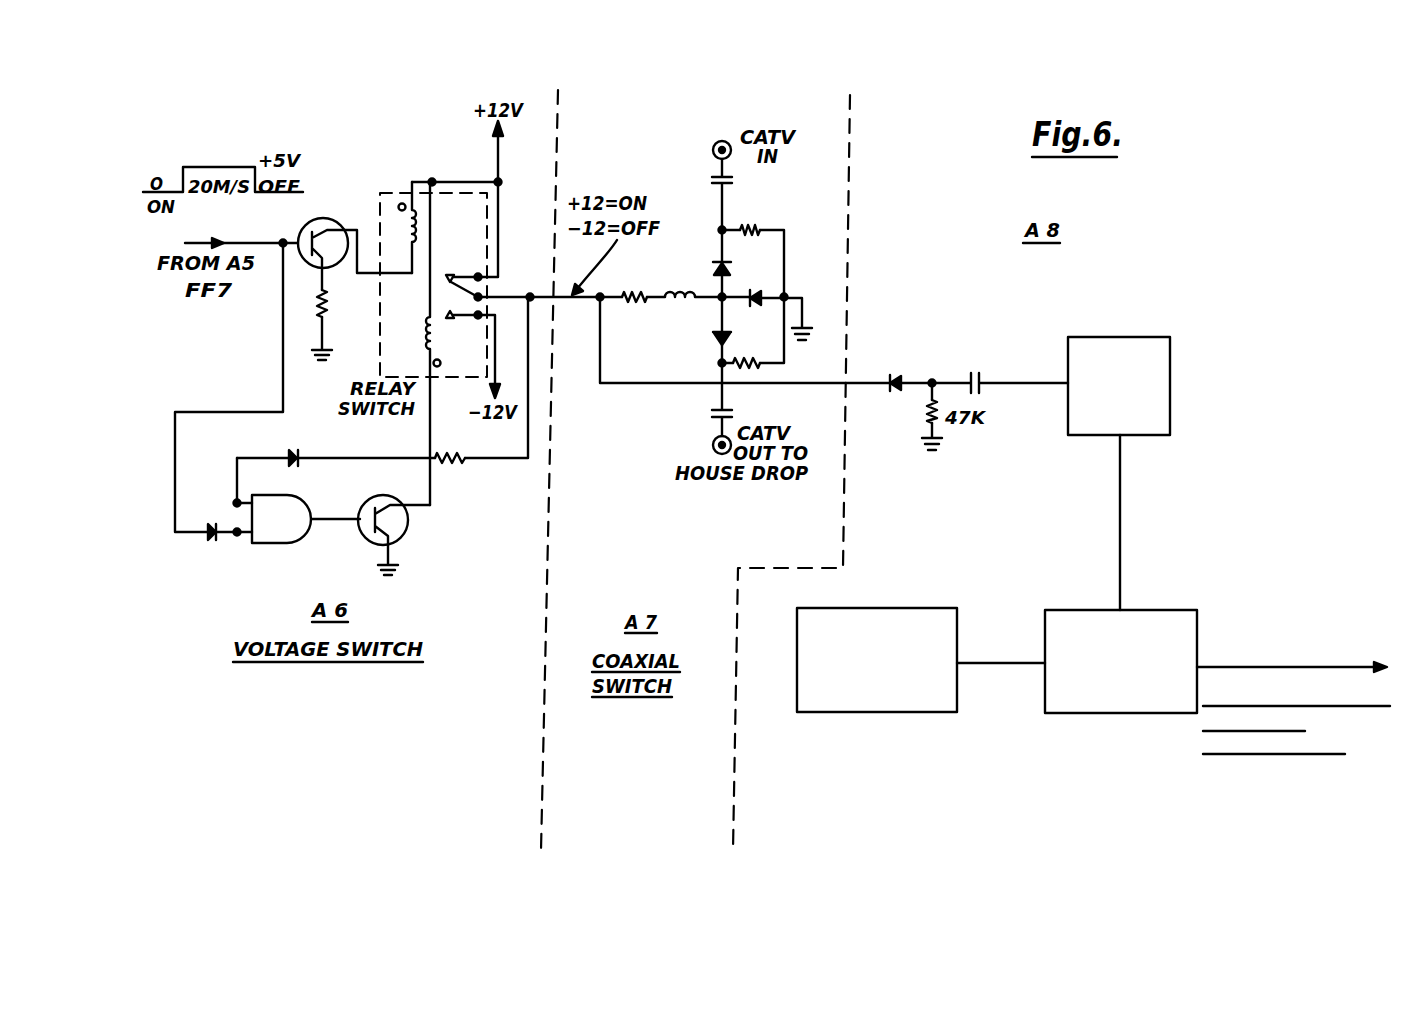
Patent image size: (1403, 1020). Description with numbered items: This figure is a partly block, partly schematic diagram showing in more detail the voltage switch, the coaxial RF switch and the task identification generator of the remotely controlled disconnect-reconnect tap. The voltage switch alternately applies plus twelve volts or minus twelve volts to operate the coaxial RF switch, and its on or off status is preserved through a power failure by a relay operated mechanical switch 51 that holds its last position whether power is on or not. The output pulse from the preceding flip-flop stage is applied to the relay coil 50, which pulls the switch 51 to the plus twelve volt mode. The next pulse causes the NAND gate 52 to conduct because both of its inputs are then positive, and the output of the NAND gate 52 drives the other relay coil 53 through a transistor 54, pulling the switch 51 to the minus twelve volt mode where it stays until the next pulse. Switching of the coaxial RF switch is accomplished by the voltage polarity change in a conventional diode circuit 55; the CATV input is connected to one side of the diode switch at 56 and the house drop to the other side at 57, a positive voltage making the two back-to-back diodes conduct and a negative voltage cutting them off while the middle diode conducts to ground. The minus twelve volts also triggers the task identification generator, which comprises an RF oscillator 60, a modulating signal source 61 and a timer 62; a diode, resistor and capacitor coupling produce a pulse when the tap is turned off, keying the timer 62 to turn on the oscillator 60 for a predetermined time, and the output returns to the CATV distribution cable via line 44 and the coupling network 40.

The relay coil 50 is at (406, 227).
The relay operated mechanical switch 51 is at (491, 288).
The NAND gate 52 is at (278, 544).
The relay coil 53 is at (433, 336).
The transistor 54 is at (405, 534).
The diode circuit 55 is at (672, 320).
The CATV input connection 56 is at (725, 229).
The house drop connection 57 is at (719, 363).
The RF oscillator 60 is at (1198, 627).
The modulating signal source 61 is at (868, 712).
The timer 62 is at (1171, 418).
The line 44 is at (1323, 665).
The coupling network 40 is at (1296, 719).